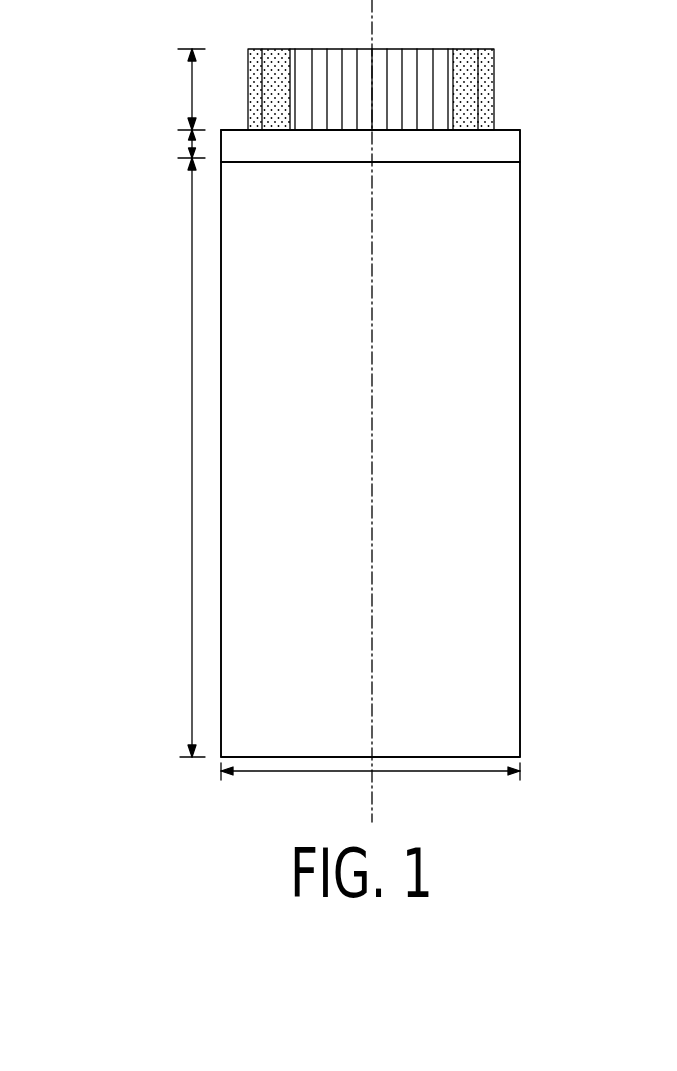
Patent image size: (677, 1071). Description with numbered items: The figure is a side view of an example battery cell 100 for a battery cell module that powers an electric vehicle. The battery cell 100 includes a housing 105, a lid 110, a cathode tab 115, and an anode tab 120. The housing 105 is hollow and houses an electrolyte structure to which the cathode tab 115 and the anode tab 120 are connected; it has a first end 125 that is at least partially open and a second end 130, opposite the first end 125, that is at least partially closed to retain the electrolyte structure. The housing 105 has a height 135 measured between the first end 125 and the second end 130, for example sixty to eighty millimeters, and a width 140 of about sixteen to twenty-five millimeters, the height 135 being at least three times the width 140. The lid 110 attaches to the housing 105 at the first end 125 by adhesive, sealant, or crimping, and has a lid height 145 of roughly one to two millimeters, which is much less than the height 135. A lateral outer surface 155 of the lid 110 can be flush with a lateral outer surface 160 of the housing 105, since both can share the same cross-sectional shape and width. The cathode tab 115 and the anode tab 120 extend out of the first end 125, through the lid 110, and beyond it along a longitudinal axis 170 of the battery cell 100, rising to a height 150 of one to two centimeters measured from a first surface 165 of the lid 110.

The battery cell 100 is at (606, 476).
The housing 105 is at (521, 307).
The lid 110 is at (520, 140).
The cathode tab 115 is at (494, 112).
The anode tab 120 is at (455, 76).
The first end 125 is at (467, 172).
The second end 130 is at (468, 750).
The height 135 is at (192, 412).
The width 140 is at (395, 772).
The lid height 145 is at (138, 143).
The height 150 is at (192, 103).
The lateral outer surface 155 is at (513, 156).
The lateral outer surface 160 is at (485, 251).
The first surface 165 is at (235, 129).
The longitudinal axis 170 is at (372, 372).